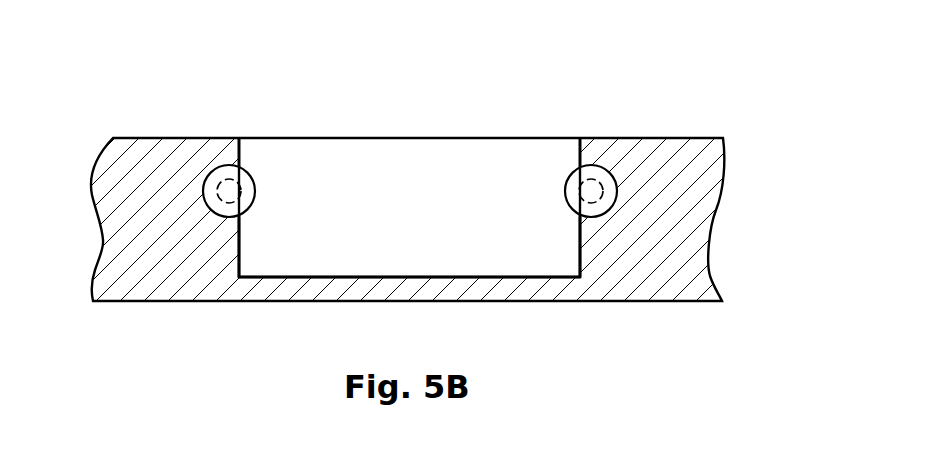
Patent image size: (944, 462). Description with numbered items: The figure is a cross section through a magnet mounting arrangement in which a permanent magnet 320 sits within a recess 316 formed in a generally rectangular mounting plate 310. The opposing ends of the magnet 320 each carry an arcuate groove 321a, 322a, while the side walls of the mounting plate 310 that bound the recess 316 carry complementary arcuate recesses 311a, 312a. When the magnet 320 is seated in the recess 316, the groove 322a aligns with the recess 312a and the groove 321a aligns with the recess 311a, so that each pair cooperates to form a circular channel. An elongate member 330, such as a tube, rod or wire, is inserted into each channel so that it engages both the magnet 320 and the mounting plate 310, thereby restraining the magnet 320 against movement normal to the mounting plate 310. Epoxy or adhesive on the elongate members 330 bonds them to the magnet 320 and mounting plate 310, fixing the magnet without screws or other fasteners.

The mounting plate 310 is at (673, 207).
The permanent magnet 320 is at (423, 188).
The elongate member 330 is at (229, 191).
The arcuate groove 322a is at (254, 188).
The arcuate groove 321a is at (566, 197).
The arcuate recess 312a is at (222, 215).
The arcuate recess 311a is at (600, 214).
The recess 316 is at (437, 277).